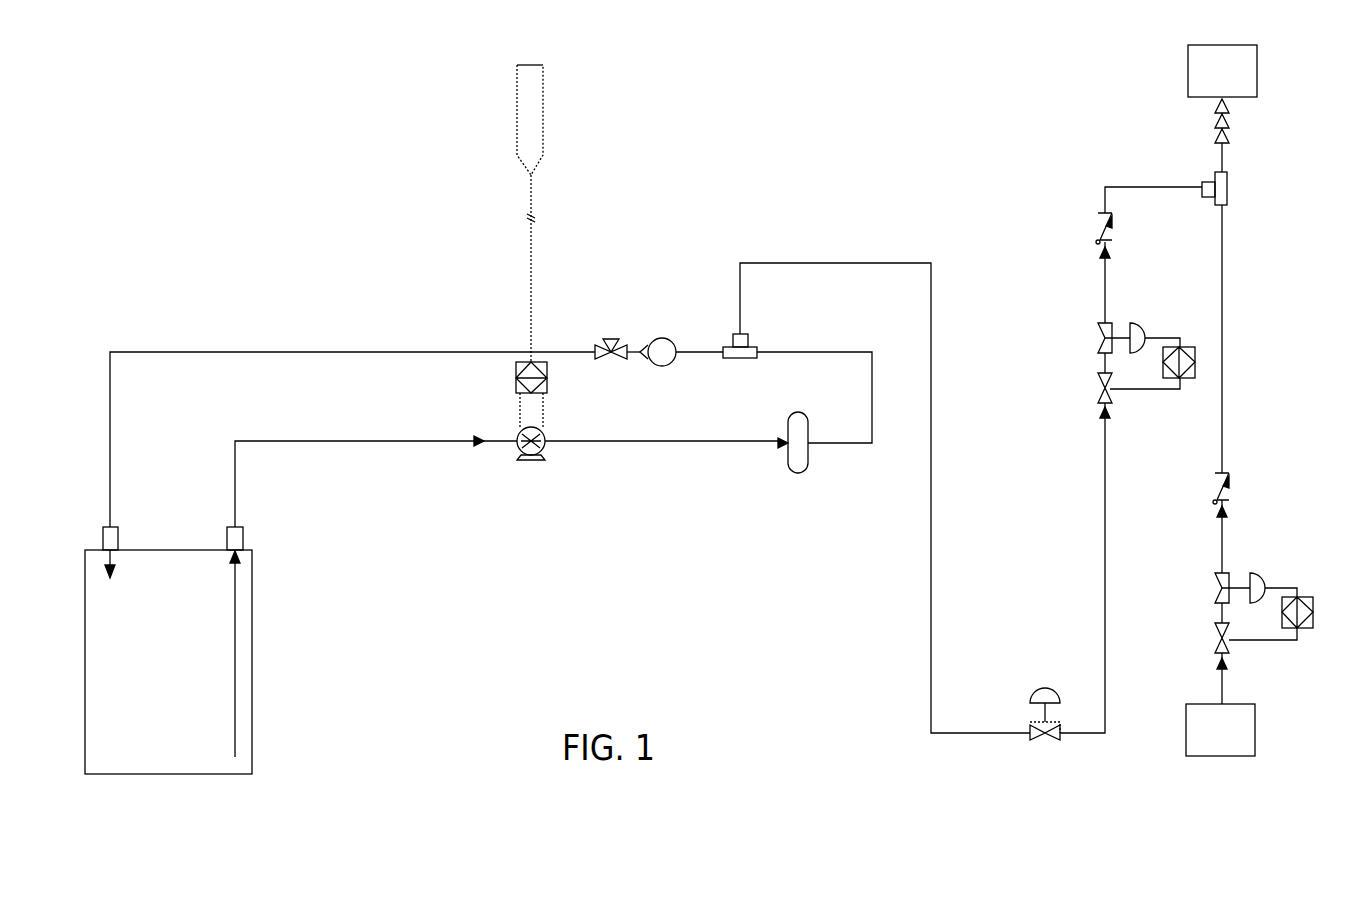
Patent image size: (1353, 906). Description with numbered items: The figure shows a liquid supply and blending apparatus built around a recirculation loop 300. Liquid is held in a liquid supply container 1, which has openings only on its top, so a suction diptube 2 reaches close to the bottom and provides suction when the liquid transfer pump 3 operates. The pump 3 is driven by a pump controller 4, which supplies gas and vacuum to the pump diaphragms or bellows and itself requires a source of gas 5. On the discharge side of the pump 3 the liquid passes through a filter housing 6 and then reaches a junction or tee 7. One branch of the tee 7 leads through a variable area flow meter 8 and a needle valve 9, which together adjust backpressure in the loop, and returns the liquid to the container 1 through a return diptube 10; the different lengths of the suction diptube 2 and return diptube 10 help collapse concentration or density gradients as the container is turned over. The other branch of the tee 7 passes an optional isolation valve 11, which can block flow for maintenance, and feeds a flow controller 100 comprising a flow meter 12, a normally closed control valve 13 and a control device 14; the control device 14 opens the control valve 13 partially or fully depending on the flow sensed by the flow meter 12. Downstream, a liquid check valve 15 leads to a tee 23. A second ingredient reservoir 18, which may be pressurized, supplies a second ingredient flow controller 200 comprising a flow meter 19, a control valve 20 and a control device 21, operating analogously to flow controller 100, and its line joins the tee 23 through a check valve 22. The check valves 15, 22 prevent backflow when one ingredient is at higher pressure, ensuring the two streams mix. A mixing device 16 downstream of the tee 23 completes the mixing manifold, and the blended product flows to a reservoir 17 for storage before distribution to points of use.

The liquid supply container 1 is at (185, 548).
The suction diptube 2 is at (236, 641).
The liquid transfer pump 3 is at (531, 460).
The pump controller 4 is at (531, 394).
The source of gas 5 is at (531, 175).
The filter housing 6 is at (798, 474).
The junction or tee 7 is at (740, 359).
The variable area flow meter 8 is at (662, 366).
The needle valve 9 is at (611, 359).
The return diptube 10 is at (114, 564).
The isolation valve 11 is at (1050, 735).
The flow meter 12 is at (1110, 403).
The control valve 13 is at (1097, 315).
The control device 14 is at (1195, 346).
The liquid check valve 15 is at (1113, 222).
The mixing device 16 is at (1225, 143).
The reservoir 17 is at (1257, 78).
The second ingredient reservoir 18 is at (1255, 727).
The flow meter 19 is at (1228, 654).
The control valve 20 is at (1217, 571).
The control device 21 is at (1313, 638).
The check valve 22 is at (1230, 482).
The tee 23 is at (1225, 208).
The flow controller 100 is at (1055, 375).
The second ingredient flow controller 200 is at (1180, 587).
The recirculation loop 300 is at (684, 240).